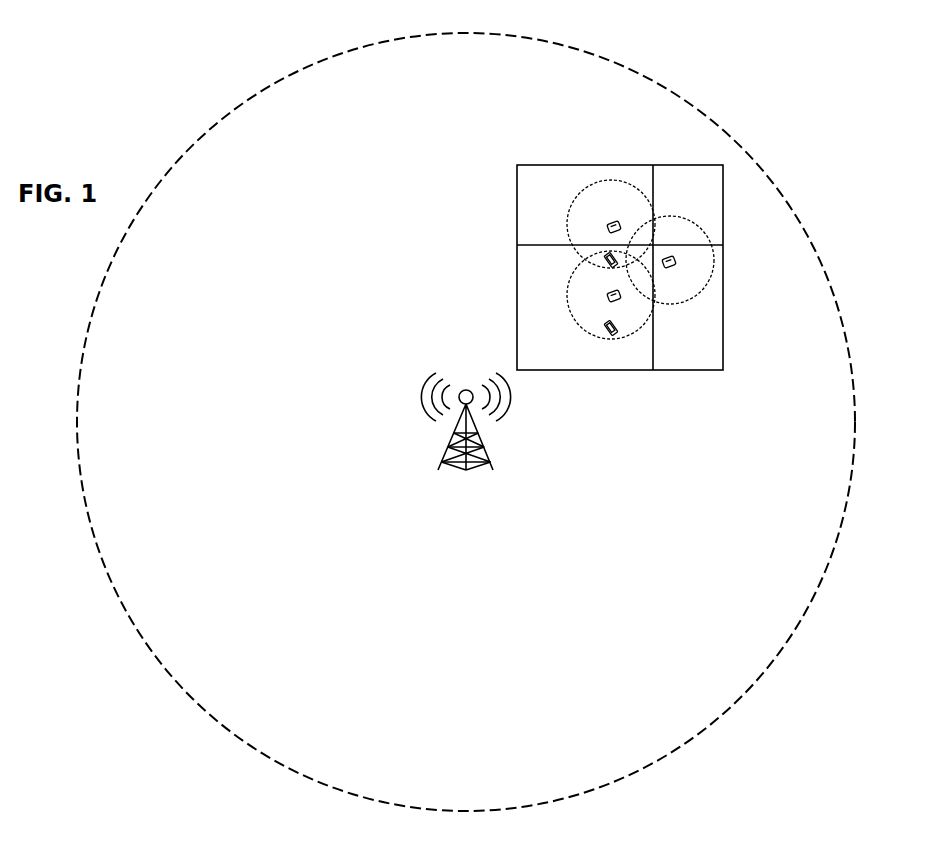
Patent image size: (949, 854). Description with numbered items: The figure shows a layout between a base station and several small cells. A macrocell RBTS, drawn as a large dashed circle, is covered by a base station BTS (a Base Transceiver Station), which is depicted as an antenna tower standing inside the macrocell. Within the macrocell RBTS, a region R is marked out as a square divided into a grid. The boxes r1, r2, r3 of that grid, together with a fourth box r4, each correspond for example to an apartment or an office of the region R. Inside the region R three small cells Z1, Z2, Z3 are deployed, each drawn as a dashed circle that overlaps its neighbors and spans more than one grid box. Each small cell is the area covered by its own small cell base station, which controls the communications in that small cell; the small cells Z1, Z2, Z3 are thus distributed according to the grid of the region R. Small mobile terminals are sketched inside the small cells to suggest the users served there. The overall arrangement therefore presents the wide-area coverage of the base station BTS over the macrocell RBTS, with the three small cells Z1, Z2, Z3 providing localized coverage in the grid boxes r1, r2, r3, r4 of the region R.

The macrocell RBTS is at (857, 423).
The region R is at (492, 266).
The box of the grid r1 is at (560, 182).
The box of the grid r2 is at (708, 205).
The box of the grid r3 is at (708, 340).
The sub-region 4 r4 is at (536, 330).
The small cell Z1 is at (570, 222).
The small cell Z2 is at (658, 217).
The small cell Z3 is at (570, 295).
The base station BTS is at (503, 427).